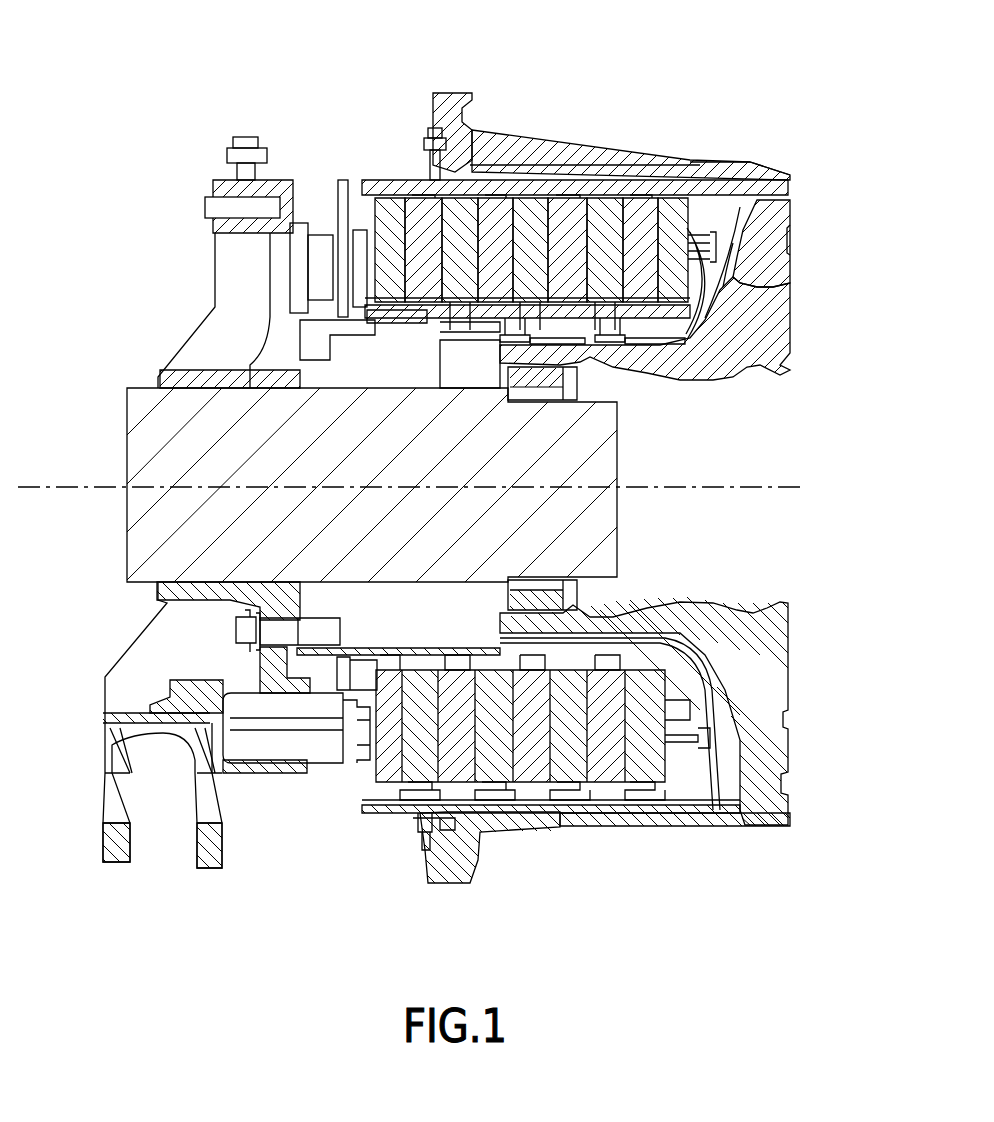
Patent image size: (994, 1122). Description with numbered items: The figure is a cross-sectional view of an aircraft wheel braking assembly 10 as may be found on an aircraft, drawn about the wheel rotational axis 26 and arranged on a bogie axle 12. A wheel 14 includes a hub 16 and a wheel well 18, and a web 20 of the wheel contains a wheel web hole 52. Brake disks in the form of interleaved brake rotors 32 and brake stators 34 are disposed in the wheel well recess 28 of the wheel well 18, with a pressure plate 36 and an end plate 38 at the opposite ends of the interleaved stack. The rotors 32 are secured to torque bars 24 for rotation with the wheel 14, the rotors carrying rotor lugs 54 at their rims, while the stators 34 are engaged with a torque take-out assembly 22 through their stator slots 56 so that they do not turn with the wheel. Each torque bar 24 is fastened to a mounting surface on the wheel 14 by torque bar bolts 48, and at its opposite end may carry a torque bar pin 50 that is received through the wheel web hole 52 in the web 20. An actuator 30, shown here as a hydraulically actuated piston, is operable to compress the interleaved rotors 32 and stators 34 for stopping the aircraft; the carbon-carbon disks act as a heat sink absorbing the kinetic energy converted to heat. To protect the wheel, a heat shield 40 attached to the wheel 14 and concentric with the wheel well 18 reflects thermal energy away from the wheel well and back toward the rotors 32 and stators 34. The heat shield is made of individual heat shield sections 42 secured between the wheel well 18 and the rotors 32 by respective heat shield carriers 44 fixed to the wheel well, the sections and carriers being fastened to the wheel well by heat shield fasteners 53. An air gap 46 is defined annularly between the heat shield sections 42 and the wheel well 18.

The aircraft wheel braking assembly 10 is at (820, 95).
The bogie axle 12 is at (106, 437).
The wheel 14 is at (642, 130).
The hub 16 is at (592, 358).
The wheel well 18 is at (770, 173).
The web 20 is at (765, 695).
The torque take-out assembly 22 is at (534, 292).
The torque bar 24 is at (374, 181).
The wheel rotational axis 26 is at (690, 487).
The wheel well recess 28 is at (787, 284).
The actuator 30 is at (275, 795).
The brake rotor 32 is at (531, 248).
The brake stator 34 is at (532, 264).
The pressure plate 36 is at (390, 250).
The end plate 38 is at (687, 250).
The heat shield 40 is at (382, 845).
The heat shield section 42 is at (566, 180).
The heat shield carrier 44 is at (452, 820).
The air gap 46 is at (462, 128).
The torque bar bolt 48 is at (428, 160).
The torque bar pin 50 is at (723, 207).
The wheel web hole 52 is at (788, 222).
The heat shield fastener 53 is at (428, 835).
The rotor lug 54 is at (500, 195).
The stator slot 56 is at (468, 340).